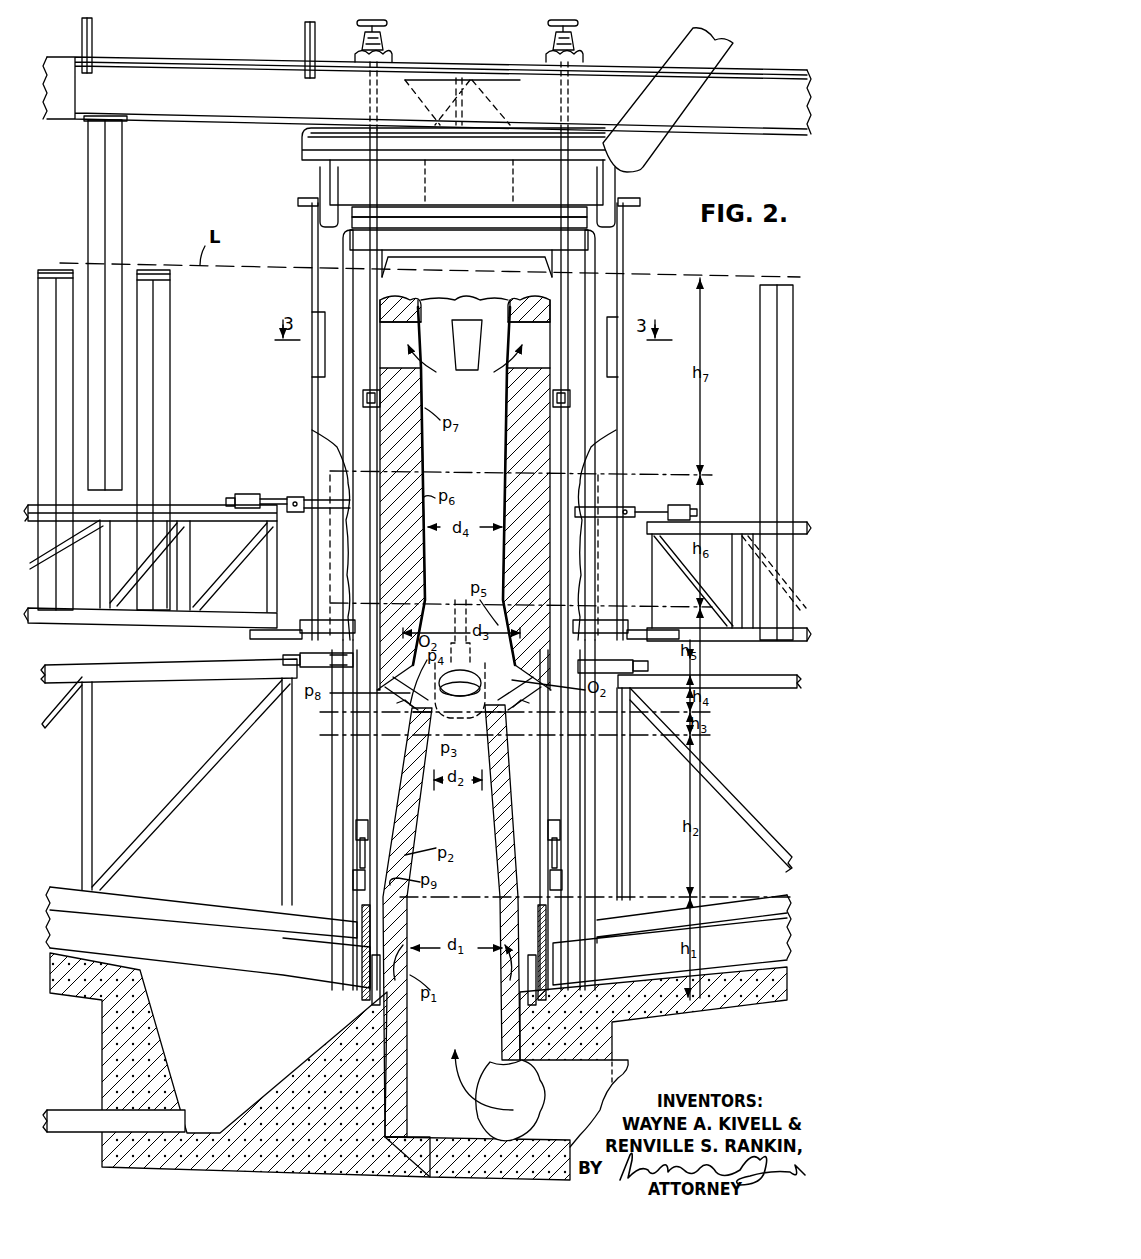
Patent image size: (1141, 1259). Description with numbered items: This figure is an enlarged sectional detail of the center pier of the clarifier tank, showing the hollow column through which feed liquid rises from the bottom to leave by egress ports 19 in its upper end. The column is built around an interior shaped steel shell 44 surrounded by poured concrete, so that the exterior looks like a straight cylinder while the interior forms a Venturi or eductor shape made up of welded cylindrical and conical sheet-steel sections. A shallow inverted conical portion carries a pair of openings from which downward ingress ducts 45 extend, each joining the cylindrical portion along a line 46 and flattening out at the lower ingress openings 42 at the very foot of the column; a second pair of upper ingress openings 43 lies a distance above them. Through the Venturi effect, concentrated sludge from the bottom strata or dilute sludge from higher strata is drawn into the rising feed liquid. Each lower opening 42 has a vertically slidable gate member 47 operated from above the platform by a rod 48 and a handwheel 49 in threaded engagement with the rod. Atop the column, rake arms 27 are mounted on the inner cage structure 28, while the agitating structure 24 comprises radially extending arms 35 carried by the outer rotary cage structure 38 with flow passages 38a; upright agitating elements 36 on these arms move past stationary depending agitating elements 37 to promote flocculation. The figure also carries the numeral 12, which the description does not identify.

The gas inlet opening 12 is at (612, 1062).
The egress ports 19 is at (405, 332).
The agitating structure 24 is at (310, 468).
The rake arms 27 is at (168, 668).
The inner cage structure 28 is at (312, 381).
The radially extending arms 35 is at (103, 625).
The upright agitating elements 36 is at (160, 452).
The stationary agitating elements 37 is at (121, 222).
The outer rotary cage structure 38 is at (312, 250).
The flow passages 38a is at (618, 378).
The lower ingress openings 42 is at (360, 975).
The upper ingress openings 43 is at (466, 680).
The shaped steel shell 44 is at (485, 460).
The ingress ducts 45 is at (400, 790).
The joining line 46 is at (413, 714).
The gate member 47 is at (365, 930).
The rod 48 is at (377, 180).
The handwheel 49 is at (386, 30).